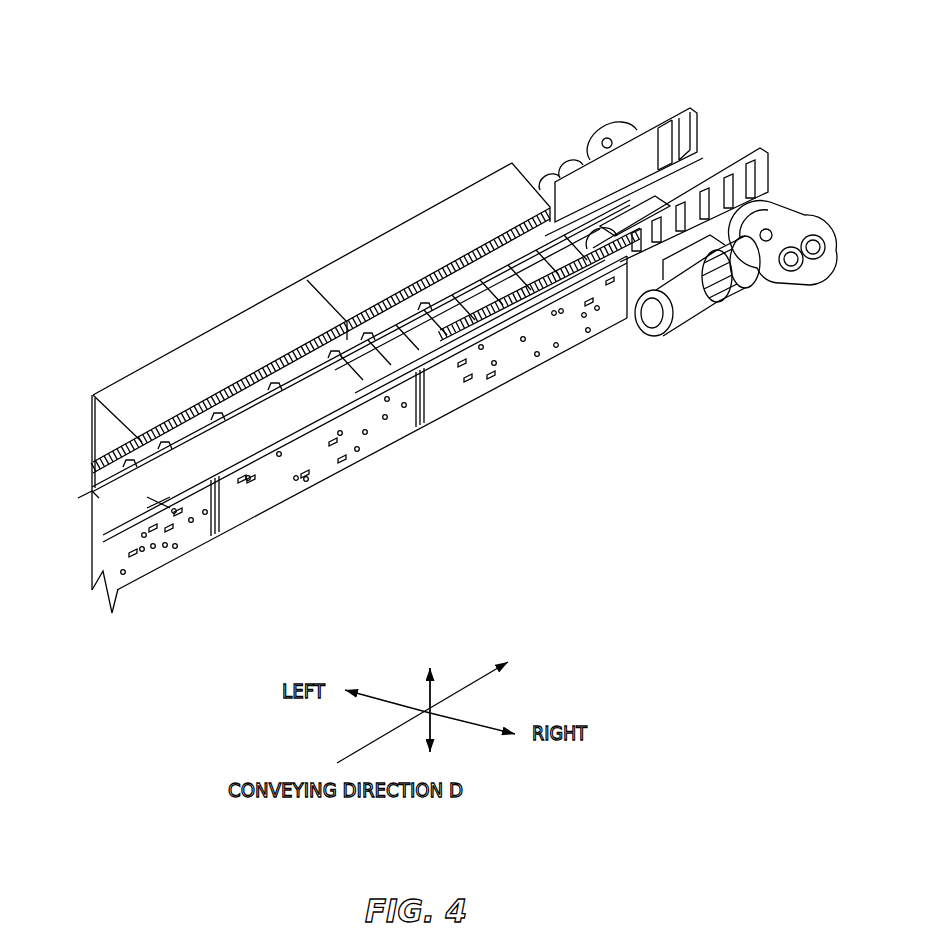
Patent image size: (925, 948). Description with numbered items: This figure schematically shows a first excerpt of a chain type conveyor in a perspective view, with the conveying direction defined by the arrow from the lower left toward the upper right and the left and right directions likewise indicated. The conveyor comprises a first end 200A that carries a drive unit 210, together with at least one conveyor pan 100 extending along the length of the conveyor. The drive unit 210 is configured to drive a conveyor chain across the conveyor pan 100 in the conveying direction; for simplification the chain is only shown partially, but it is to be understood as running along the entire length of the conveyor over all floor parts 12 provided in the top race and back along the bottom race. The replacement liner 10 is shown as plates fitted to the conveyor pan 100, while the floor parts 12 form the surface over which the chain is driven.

The replacement liner 10 is at (492, 206).
The floor parts 12 is at (150, 503).
The conveyor pan 100 is at (137, 588).
The first end 200A is at (679, 88).
The drive unit 210 is at (807, 266).